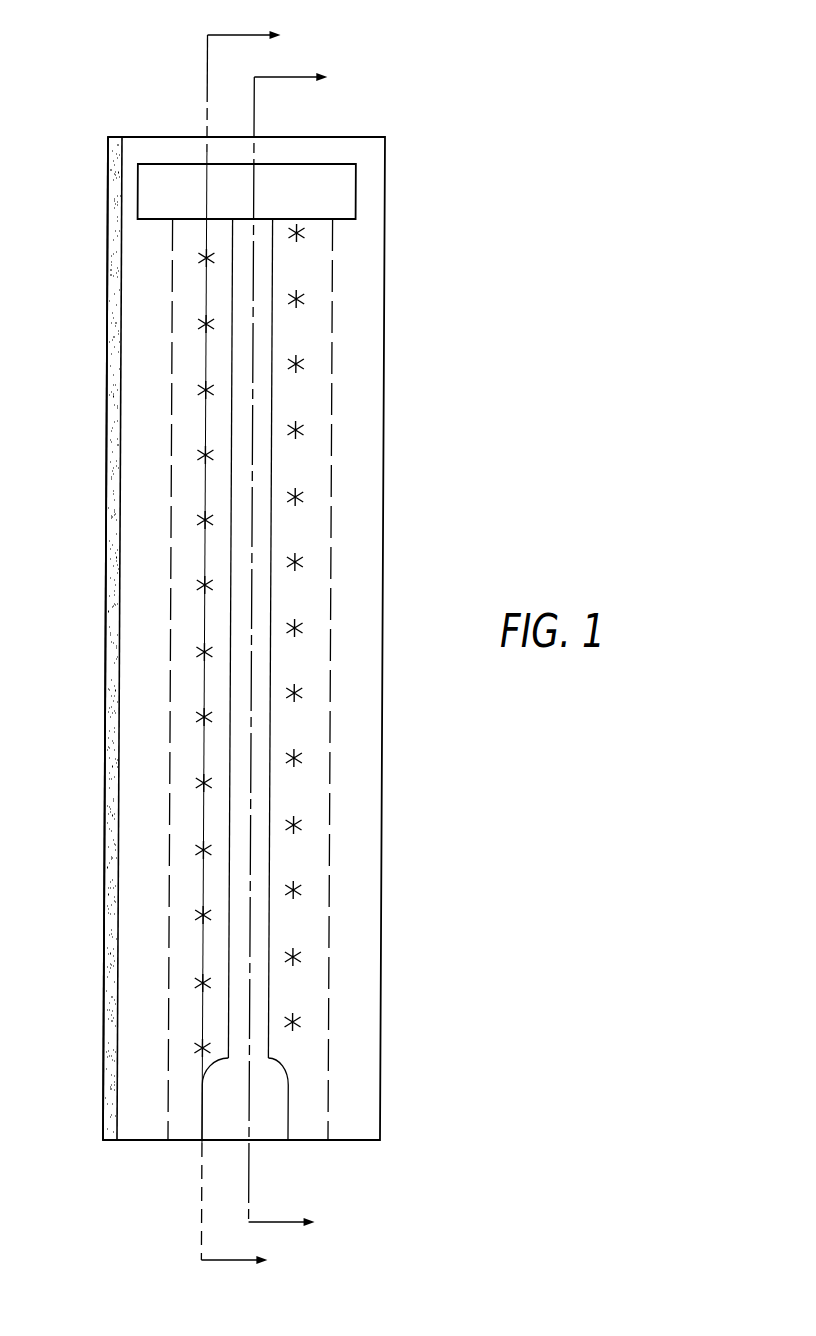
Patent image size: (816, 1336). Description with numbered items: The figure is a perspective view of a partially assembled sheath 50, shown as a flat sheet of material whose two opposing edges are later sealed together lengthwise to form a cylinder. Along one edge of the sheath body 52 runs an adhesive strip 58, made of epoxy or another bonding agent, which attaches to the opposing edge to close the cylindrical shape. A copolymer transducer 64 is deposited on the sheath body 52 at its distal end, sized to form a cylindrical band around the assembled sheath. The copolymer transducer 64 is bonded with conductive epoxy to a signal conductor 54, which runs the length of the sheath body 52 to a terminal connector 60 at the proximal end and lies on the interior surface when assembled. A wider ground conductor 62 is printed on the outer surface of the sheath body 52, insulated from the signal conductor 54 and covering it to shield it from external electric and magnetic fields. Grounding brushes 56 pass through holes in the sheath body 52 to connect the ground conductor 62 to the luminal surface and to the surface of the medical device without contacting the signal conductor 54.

The sheath 50 is at (428, 94).
The sheath body 52 is at (372, 300).
The signal conductor 54 is at (258, 436).
The grounding brushes 56 is at (200, 585).
The adhesive strip 58 is at (108, 778).
The terminal connector 60 is at (267, 1125).
The ground conductor 62 is at (190, 243).
The copolymer transducer 64 is at (344, 190).